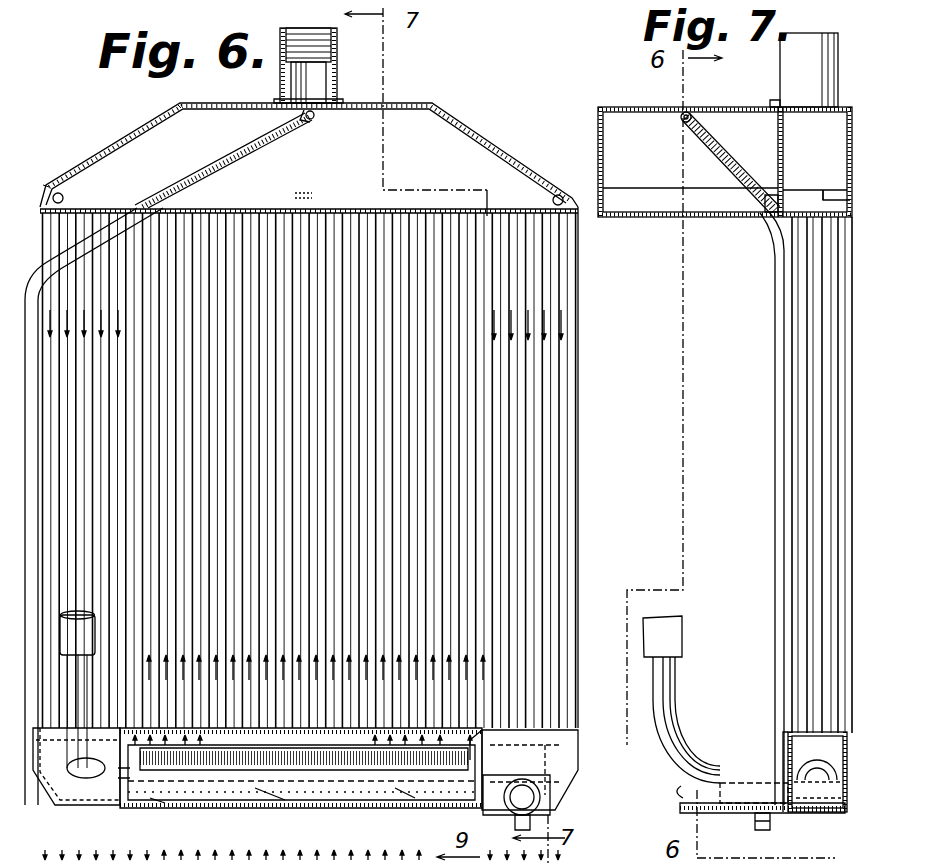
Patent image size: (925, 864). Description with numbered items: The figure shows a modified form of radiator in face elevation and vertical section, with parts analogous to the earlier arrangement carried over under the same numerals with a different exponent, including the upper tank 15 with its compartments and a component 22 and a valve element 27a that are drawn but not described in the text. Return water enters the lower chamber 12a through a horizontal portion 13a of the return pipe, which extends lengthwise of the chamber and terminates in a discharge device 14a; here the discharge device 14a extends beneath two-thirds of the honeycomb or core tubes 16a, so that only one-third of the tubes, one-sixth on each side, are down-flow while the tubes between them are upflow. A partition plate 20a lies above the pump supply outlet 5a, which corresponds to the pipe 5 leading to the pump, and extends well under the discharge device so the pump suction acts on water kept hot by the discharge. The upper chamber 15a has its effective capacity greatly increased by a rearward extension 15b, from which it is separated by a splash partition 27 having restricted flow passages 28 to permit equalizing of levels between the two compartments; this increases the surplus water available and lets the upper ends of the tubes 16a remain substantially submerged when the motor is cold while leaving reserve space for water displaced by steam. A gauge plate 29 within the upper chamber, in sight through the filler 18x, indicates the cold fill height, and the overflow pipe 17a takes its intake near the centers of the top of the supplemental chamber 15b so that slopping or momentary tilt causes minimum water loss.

In FIG. 7, the pipe 5 is at (710, 805).
In FIG. 6, the pump supply outlet 5a is at (548, 796).
In FIG. 7, the pump supply outlet 5a is at (690, 783).
In FIG. 6, the lower chamber 12a is at (553, 748).
In FIG. 7, the lower chamber 12a is at (848, 765).
In FIG. 6, the horizontal portion 13a is at (243, 782).
In FIG. 6, the discharge device 14a is at (328, 790).
In FIG. 6, the upper tank 15 is at (309, 158).
In FIG. 7, the upper chamber 15a is at (825, 135).
In FIG. 7, the rearward extension 15b is at (622, 112).
In FIG. 6, the tubes 16a is at (538, 493).
In FIG. 7, the tubes 16a is at (822, 265).
In FIG. 6, the overflow pipe 17a is at (262, 140).
In FIG. 7, the overflow pipe 17a is at (775, 335).
In FIG. 6, the filler 18x is at (282, 40).
In FIG. 7, the filler 18x is at (800, 76).
In FIG. 6, the partition plate 20a is at (462, 808).
In FIG. 7, the partition plate 20a is at (830, 818).
In FIG. 6, the thermostat 22 is at (82, 694).
In FIG. 6, the splash partition 27 is at (460, 145).
In FIG. 7, the splash partition 27 is at (775, 165).
In FIG. 6, the valve 27a is at (490, 762).
In FIG. 7, the valve 27a is at (812, 760).
In FIG. 6, the restricted flow passages 28 is at (314, 122).
In FIG. 7, the restricted flow passages 28 is at (775, 125).
In FIG. 6, the gauge plate 29 is at (312, 192).
In FIG. 7, the gauge plate 29 is at (840, 196).